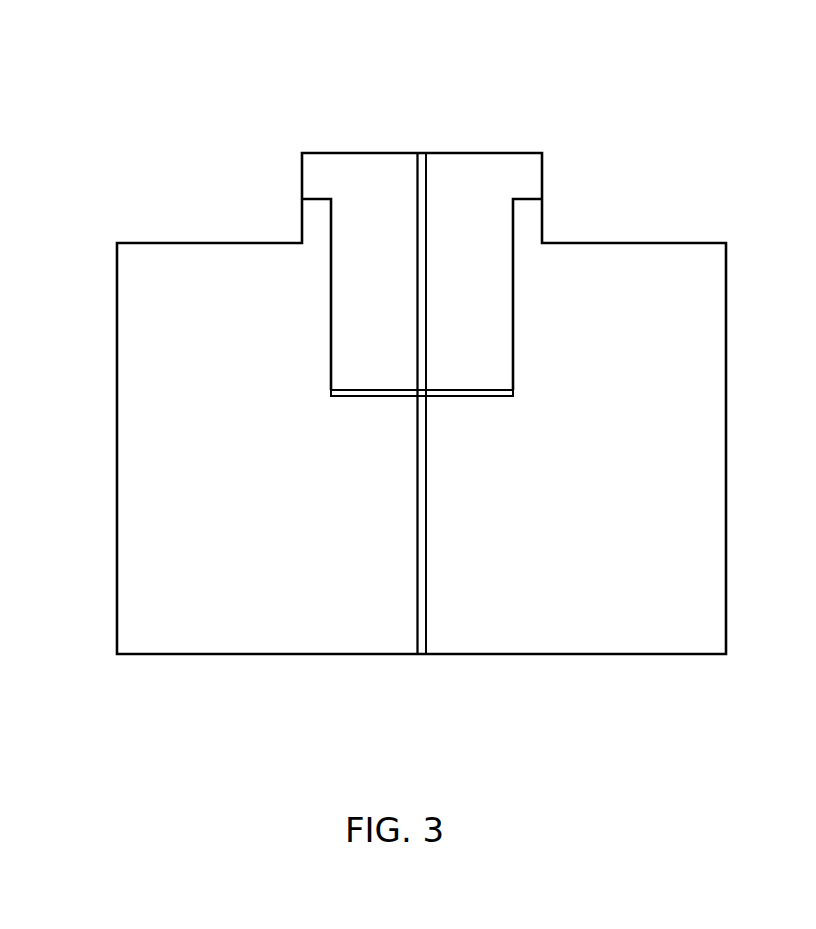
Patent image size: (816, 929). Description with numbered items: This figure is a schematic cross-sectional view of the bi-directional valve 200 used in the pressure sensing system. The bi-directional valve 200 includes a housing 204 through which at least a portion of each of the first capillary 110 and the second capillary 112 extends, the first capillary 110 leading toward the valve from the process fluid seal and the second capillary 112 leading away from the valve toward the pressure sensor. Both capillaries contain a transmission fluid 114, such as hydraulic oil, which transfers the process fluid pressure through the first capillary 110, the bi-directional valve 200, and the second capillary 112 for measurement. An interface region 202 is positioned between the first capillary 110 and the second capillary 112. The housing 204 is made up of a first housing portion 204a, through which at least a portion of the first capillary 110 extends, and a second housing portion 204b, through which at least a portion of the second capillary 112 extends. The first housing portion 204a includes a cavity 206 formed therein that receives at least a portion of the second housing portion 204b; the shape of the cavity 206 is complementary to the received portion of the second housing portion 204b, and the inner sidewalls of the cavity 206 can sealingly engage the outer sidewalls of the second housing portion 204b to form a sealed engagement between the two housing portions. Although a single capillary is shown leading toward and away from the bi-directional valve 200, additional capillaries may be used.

The bi-directional valve 200 is at (421, 374).
The interface region 202 is at (513, 390).
The housing 204 is at (464, 403).
The first housing portion 204a is at (598, 566).
The second housing portion 204b is at (500, 256).
The cavity 206 is at (513, 297).
The first capillary 110 is at (426, 517).
The second capillary 112 is at (417, 318).
The transmission fluid 114 is at (420, 633).